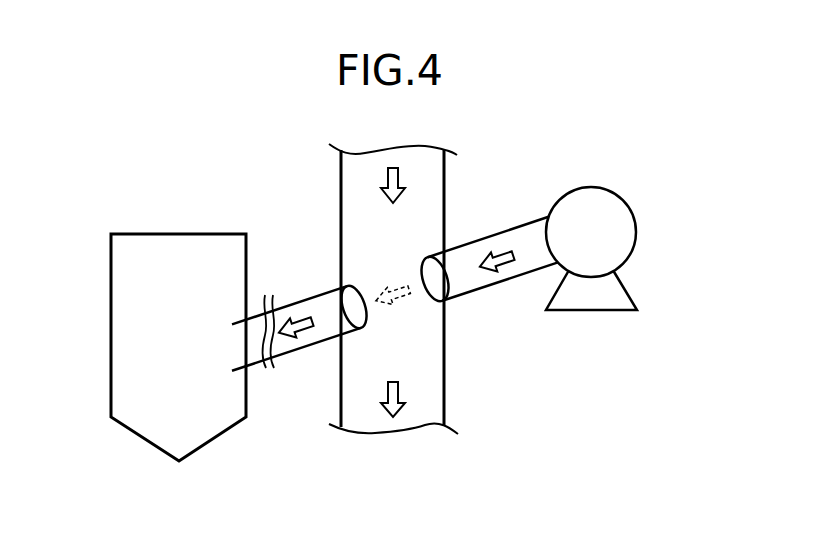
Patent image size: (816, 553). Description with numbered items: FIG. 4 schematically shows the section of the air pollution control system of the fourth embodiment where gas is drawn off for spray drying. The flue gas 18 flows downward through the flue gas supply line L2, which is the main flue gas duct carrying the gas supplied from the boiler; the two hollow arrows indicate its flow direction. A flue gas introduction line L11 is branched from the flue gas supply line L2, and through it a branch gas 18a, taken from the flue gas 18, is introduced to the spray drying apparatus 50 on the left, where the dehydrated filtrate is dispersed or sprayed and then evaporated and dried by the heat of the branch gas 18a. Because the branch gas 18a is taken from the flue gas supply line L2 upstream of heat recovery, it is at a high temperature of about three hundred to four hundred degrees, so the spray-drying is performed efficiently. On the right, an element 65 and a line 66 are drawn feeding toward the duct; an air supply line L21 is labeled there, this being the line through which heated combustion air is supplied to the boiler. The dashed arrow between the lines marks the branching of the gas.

The spray drying apparatus 50 is at (136, 214).
The flue gas 18 is at (397, 289).
The branch gas 18a is at (301, 319).
The supply pipe 66 is at (487, 272).
The pump 65 is at (592, 311).
The flue gas supply line L2 is at (444, 175).
The flue gas introduction line L11 is at (300, 380).
The air supply line L21 is at (497, 285).